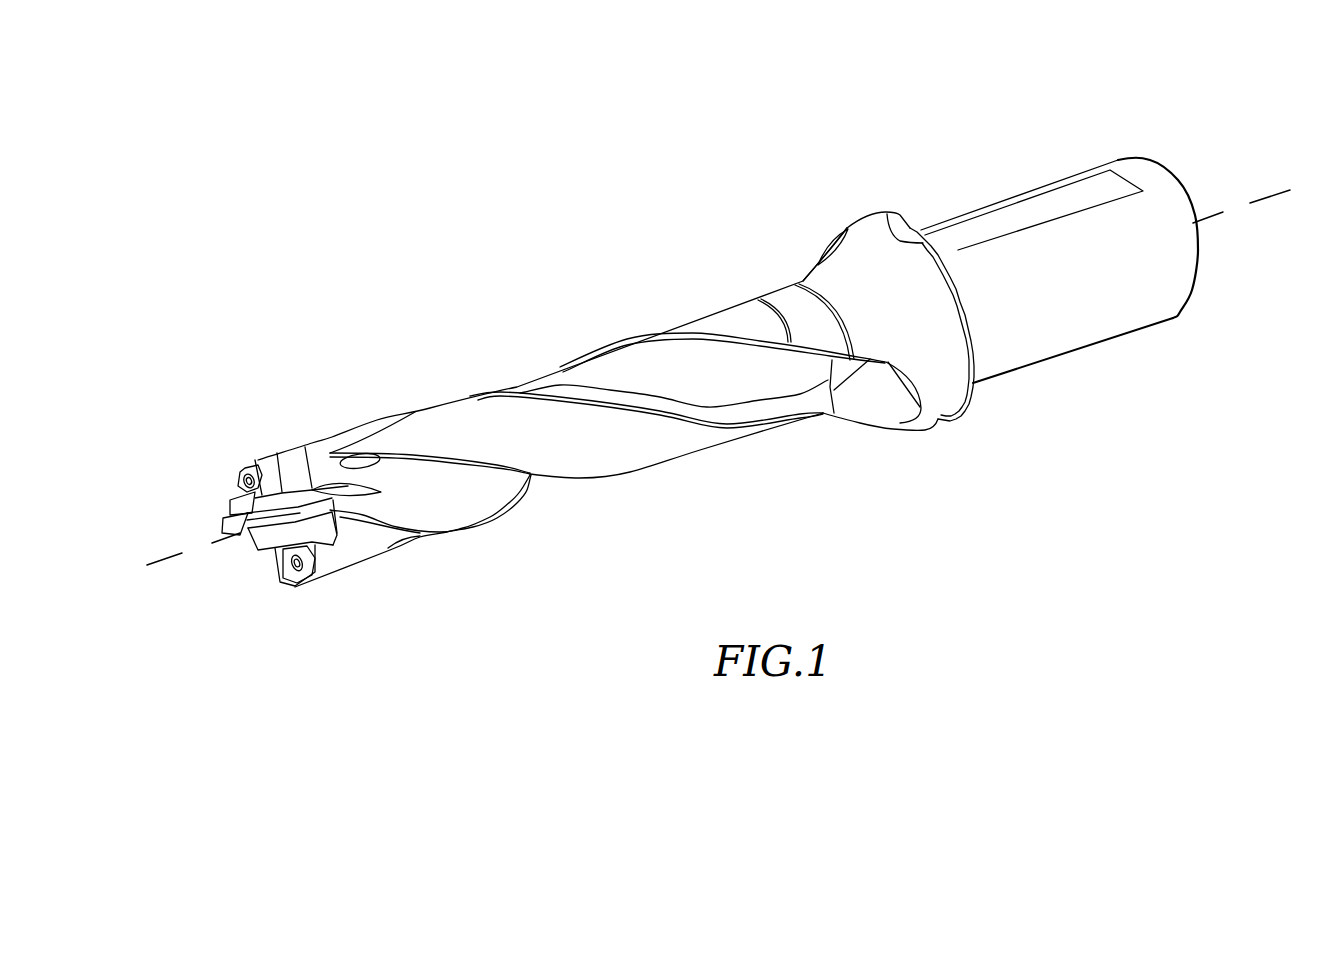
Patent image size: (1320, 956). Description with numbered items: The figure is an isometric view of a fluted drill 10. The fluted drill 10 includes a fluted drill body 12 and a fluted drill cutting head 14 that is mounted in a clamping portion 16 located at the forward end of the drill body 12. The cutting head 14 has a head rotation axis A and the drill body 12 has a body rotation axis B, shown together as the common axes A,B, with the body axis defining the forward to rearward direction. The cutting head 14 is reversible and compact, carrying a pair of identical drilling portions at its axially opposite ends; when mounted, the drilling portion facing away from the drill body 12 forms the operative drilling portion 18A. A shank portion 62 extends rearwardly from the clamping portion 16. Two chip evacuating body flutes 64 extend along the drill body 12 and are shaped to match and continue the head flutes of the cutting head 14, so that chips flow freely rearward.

The fluted drill 10 is at (456, 123).
The fluted drill body 12 is at (528, 240).
The fluted drill cutting head 14 is at (313, 300).
The clamping portion 16 is at (329, 404).
The operative drilling portion 18A is at (235, 559).
The shank portion 62 is at (678, 326).
The body flute 64 is at (710, 378).
The head rotation axis and body rotation axis A,B is at (197, 548).